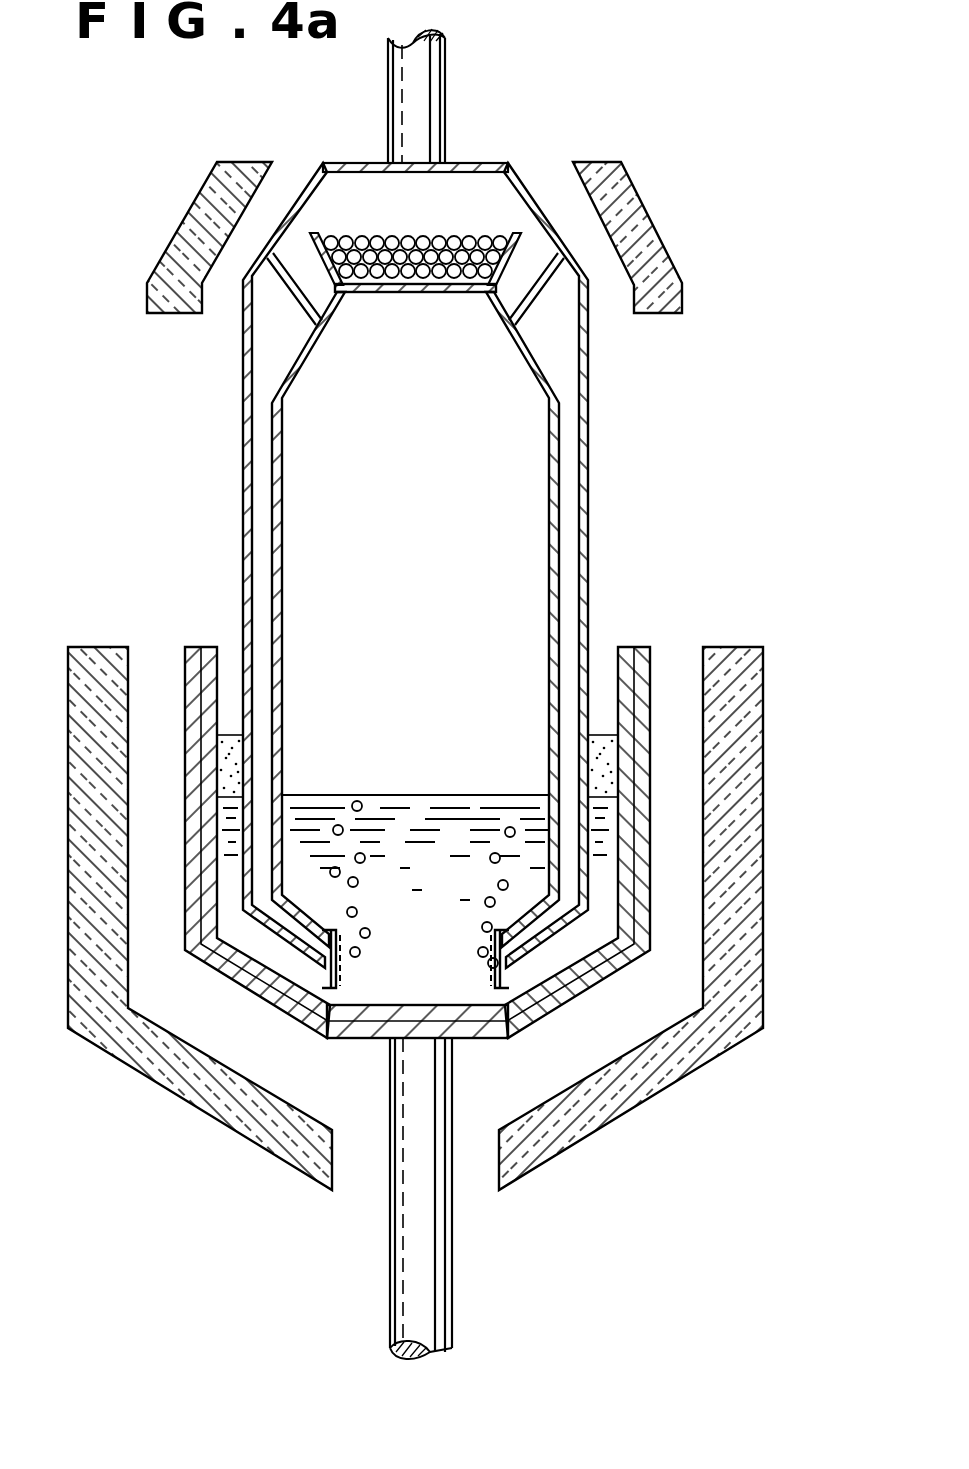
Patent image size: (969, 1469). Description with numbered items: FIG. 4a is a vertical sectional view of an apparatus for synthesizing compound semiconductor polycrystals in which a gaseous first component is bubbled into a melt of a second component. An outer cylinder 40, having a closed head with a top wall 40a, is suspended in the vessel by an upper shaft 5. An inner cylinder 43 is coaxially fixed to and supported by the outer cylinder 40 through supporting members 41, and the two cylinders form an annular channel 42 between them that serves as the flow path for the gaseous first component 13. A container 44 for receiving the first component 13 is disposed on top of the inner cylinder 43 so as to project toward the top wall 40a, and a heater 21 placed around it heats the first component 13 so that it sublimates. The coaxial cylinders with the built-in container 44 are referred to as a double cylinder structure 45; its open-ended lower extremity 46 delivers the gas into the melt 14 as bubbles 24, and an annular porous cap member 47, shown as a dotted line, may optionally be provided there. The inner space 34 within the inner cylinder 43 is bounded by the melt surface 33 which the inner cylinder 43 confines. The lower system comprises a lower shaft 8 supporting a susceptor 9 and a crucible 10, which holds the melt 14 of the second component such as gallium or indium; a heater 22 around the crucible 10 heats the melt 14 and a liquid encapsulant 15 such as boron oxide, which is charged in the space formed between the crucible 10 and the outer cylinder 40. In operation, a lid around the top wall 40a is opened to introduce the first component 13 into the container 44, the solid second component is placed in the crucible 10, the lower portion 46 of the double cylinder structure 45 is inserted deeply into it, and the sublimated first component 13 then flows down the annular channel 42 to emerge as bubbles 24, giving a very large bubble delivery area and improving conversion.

The upper shaft 5 is at (422, 95).
The top wall of the outer cylinder 40a is at (348, 162).
The heater 21 is at (238, 162).
The first component 13 is at (462, 240).
The container 44 is at (523, 248).
The supporting members 41 is at (530, 310).
The inner space of vessel 34 is at (323, 370).
The outer cylinder 40 is at (583, 437).
The inner cylinder 43 is at (560, 497).
The annular channel 42 is at (568, 553).
The double cylinder structure 45 is at (432, 565).
The heater 22 is at (93, 670).
The crucible 10 is at (213, 652).
The susceptor 9 is at (630, 652).
The melt 14 is at (438, 985).
The liquid encapsulant 15 is at (233, 738).
The melt 33 is at (350, 794).
The bubbles 24 is at (360, 880).
The open-ended lower extremity 46 is at (318, 962).
The annular porous cap member 47 is at (483, 984).
The lower shaft 8 is at (438, 1270).